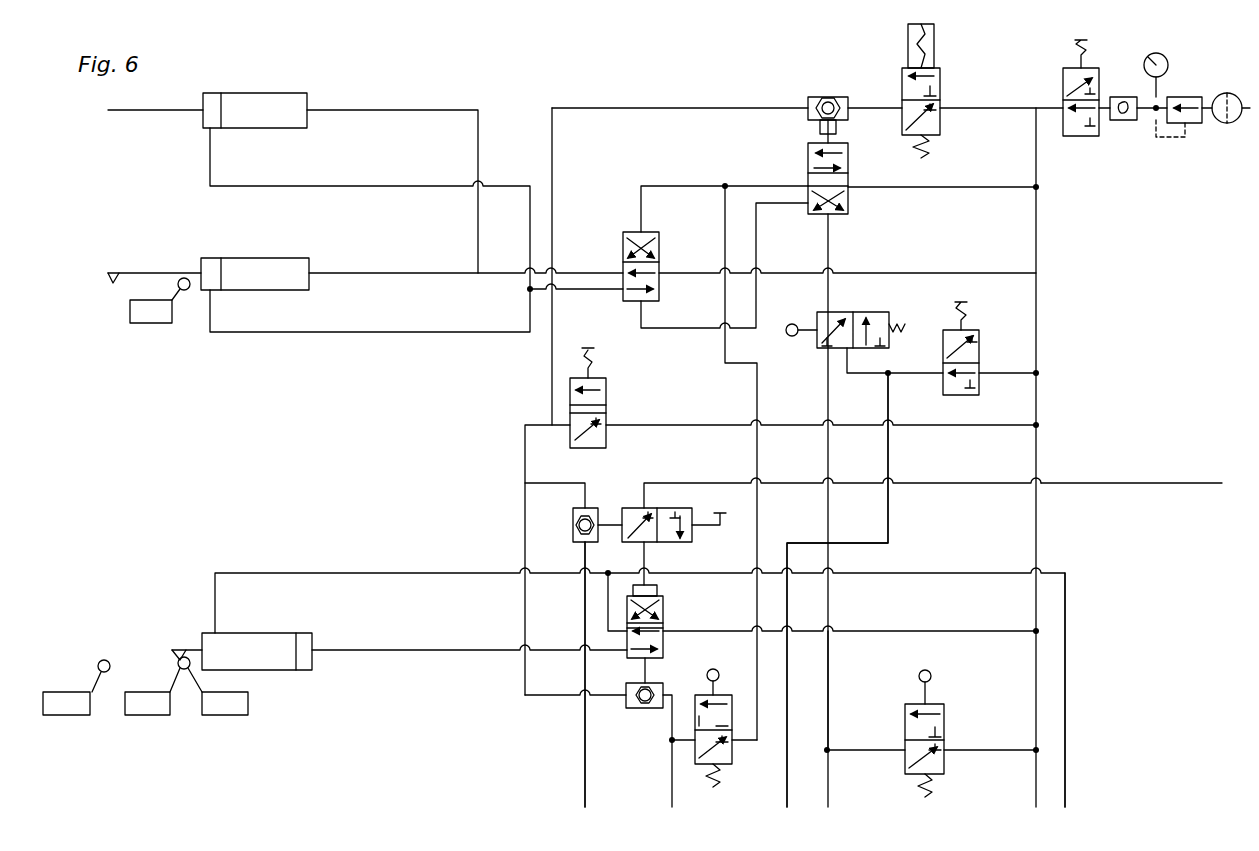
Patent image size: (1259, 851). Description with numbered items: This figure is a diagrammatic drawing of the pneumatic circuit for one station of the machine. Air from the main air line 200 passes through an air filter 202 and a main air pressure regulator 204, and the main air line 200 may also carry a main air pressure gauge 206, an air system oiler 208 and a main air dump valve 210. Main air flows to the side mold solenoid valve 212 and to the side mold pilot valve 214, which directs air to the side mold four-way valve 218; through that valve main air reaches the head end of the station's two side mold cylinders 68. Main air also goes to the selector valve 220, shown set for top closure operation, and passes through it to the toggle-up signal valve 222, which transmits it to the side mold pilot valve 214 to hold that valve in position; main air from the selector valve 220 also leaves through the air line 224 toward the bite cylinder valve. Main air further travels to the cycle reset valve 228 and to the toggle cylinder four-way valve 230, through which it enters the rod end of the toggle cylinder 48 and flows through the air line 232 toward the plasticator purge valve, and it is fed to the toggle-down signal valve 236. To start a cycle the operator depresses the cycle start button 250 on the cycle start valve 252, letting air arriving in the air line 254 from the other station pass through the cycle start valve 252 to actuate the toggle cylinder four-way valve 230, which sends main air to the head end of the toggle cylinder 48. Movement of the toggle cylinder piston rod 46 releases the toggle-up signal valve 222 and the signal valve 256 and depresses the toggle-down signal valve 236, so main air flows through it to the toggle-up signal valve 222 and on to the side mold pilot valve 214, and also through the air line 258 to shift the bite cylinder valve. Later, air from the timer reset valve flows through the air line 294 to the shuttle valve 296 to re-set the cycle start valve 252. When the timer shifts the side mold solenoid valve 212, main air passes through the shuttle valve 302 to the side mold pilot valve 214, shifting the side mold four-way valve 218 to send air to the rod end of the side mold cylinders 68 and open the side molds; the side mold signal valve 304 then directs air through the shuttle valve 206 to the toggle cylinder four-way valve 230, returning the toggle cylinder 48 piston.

The toggle cylinder piston rod 46 is at (182, 648).
The toggle cylinder 48 is at (285, 634).
The side mold cylinders 68 is at (297, 93).
The main air line 200 is at (1246, 114).
The air filter 202 is at (1236, 95).
The main air pressure regulator 204 is at (1181, 97).
The main air pressure gauge / shuttle valve 206 is at (1162, 58).
The air system oiler 208 is at (1110, 104).
The main air dump valve 210 is at (1062, 96).
The side mold solenoid valve 212 is at (940, 96).
The side mold pilot valve 214 is at (808, 185).
The side mold four-way valve 218 is at (640, 232).
The selector valve 220 is at (976, 330).
The toggle-up signal valve 222 is at (135, 716).
The air line 224 is at (888, 380).
The cycle reset valve 228 is at (606, 394).
The toggle cylinder four-way valve 230 is at (664, 610).
The air line 232 is at (1066, 788).
The toggle-down signal valve 236 is at (58, 716).
The cycle start button 250 is at (726, 508).
The cycle start valve 252 is at (665, 540).
The air line 254 is at (1088, 485).
The signal valve 256 is at (210, 716).
The air line 258 is at (830, 606).
The air line 294 is at (585, 797).
The shuttle valve 296 is at (575, 530).
The shuttle valve 302 is at (826, 97).
The side mold signal valve 304 is at (131, 310).